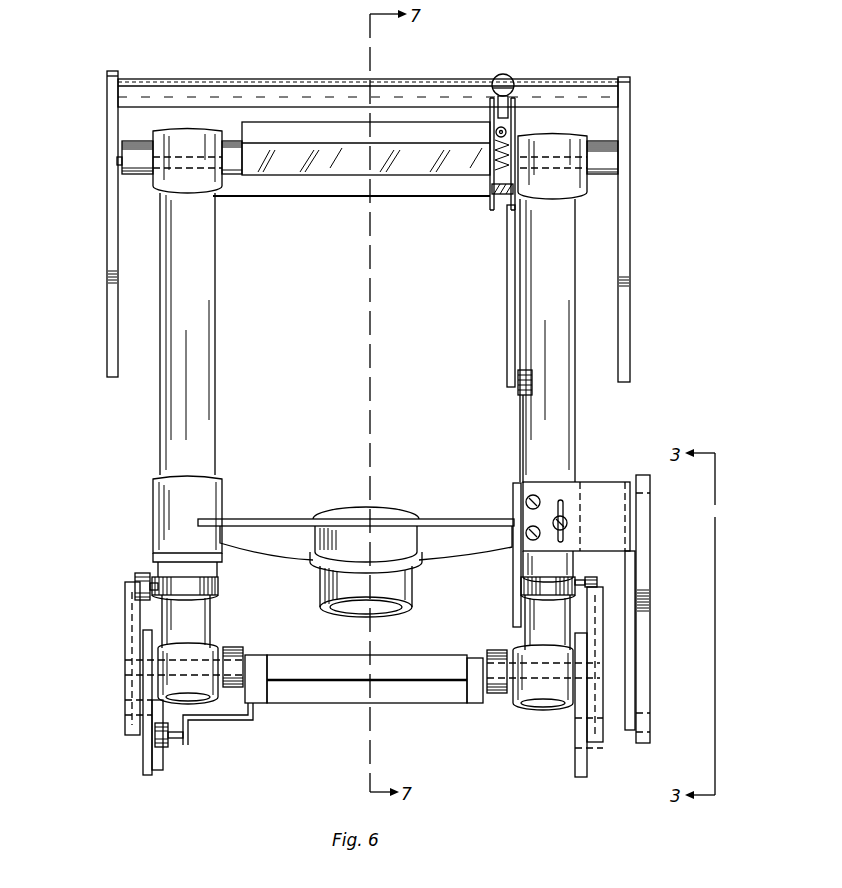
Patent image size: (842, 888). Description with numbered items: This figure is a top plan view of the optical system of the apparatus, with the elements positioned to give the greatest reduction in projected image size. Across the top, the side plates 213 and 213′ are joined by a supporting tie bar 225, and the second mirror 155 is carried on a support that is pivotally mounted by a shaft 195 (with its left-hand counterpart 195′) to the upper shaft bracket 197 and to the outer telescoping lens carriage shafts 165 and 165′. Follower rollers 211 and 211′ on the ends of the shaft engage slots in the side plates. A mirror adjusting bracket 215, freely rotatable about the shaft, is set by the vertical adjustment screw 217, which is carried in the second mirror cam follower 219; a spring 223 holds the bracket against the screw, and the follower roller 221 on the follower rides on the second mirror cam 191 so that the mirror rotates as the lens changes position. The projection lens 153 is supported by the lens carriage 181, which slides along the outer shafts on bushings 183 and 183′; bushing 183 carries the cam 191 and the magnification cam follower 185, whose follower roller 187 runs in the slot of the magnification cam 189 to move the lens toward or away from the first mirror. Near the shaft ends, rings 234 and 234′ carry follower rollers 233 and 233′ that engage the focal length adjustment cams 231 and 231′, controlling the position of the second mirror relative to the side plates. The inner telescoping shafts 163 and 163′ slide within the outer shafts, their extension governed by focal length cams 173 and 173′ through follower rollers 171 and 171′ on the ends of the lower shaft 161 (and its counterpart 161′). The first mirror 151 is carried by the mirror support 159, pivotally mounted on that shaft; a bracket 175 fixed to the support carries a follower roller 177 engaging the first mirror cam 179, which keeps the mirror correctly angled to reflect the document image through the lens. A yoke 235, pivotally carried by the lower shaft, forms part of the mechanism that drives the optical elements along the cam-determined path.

The supporting tie bar 225 is at (152, 80).
The side plate 213′ is at (107, 307).
The side plate 213 is at (628, 339).
The follower roller 211′ is at (108, 154).
The follower roller 211 is at (622, 162).
The shaft 195′ is at (194, 165).
The shaft 195 is at (561, 165).
The outer telescoping lens carriage shaft 165′ is at (215, 310).
The outer telescoping lens carriage shaft 165 is at (567, 410).
The upper shaft bracket 197 is at (265, 188).
The second mirror 155 is at (404, 178).
The mirror adjusting bracket 215 is at (507, 137).
The vertical adjustment screw 217 is at (508, 77).
The spring 223 is at (493, 198).
The second mirror cam follower 219 is at (507, 262).
The follower roller 221 is at (518, 391).
The second mirror cam 191 is at (522, 428).
The bushing 183′ is at (160, 493).
The bushing 183 is at (552, 481).
The lens carriage 181 is at (459, 509).
The projection lens 153 is at (380, 562).
The follower roller 233′ is at (137, 578).
The follower roller 233 is at (591, 577).
The ring 234′ is at (218, 585).
The ring 234 is at (520, 589).
The inner telescoping lens carriage shaft 163′ is at (205, 617).
The inner telescoping lens carriage shaft 163 is at (525, 640).
The shaft 161′ is at (160, 690).
The shaft 161 is at (515, 702).
The follower roller 171′ is at (165, 660).
The follower roller 171 is at (580, 690).
The yoke 235 is at (481, 694).
The first mirror 151 is at (410, 666).
The mirror support 159 is at (258, 694).
The bracket 175 is at (225, 722).
The follower roller 177 is at (170, 745).
The first mirror cam 179 is at (160, 758).
The focal length cam 173′ is at (143, 763).
The focal length cam 173 is at (577, 766).
The focal length adjustment cam 231′ is at (127, 620).
The focal length adjustment cam 231 is at (597, 742).
The magnification cam follower 185 is at (640, 572).
The magnification cam 189 is at (645, 620).
The follower roller 187 is at (644, 720).